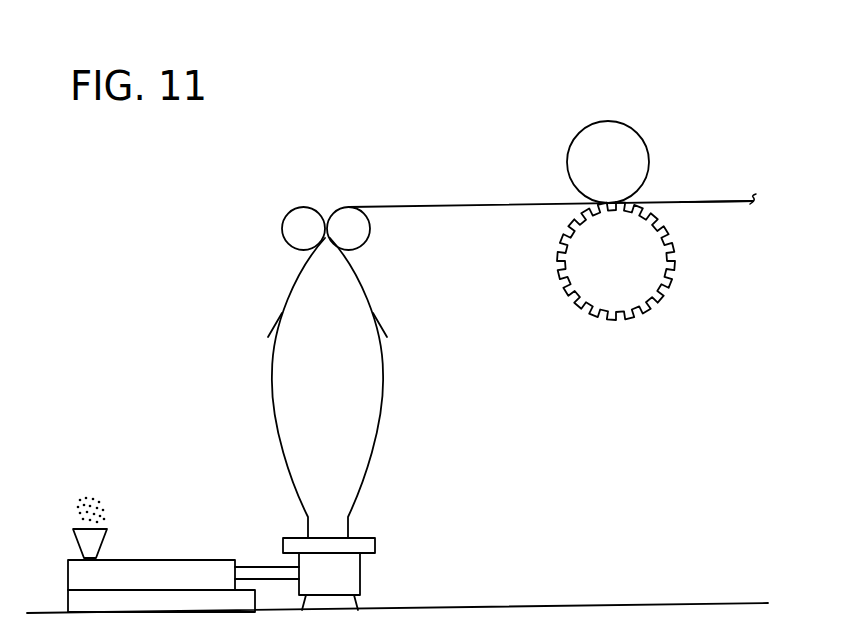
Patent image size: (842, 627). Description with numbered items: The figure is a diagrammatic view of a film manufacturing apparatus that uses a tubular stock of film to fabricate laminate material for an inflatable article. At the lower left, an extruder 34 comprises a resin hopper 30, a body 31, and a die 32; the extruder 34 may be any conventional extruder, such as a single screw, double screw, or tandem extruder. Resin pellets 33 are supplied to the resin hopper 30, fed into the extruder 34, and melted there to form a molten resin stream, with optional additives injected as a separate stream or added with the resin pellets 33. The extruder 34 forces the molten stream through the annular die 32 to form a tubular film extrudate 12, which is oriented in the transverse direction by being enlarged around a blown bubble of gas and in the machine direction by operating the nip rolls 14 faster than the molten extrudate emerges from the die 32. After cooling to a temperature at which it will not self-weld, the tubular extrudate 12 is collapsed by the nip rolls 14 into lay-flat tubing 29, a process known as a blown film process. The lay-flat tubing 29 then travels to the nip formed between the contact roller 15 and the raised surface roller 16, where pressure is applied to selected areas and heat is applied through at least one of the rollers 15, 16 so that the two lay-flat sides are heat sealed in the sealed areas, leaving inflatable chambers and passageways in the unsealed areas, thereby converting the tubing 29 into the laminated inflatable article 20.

The tubular film extrudate 12 is at (474, 222).
The nip rolls 14 is at (295, 220).
The contact roller 15 is at (582, 143).
The raised surface roller 16 is at (577, 283).
The inflatable article 20 is at (713, 192).
The lay-flat tubing 29 is at (424, 205).
The resin hopper 30 is at (95, 540).
The body 31 is at (78, 580).
The die 32 is at (352, 570).
The resin pellets 33 is at (110, 492).
The extruder 34 is at (158, 568).